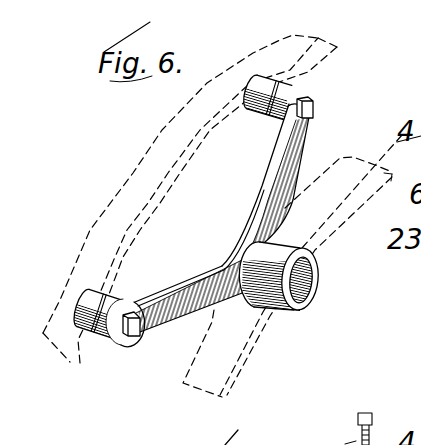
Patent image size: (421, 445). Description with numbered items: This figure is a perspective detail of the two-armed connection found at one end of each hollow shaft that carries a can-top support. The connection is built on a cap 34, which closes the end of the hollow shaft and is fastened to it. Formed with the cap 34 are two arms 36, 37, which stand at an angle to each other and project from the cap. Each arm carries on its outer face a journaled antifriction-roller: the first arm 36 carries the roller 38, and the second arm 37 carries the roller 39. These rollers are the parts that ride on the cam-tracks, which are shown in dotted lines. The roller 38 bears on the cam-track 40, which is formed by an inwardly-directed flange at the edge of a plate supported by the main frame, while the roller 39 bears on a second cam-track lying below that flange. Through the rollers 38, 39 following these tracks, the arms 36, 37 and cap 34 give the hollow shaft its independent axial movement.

The cap 34 is at (319, 282).
The arm 36 is at (287, 160).
The arm 37 is at (180, 305).
The antifriction-roller 38 is at (262, 84).
The antifriction-roller 39 is at (84, 303).
The cam-track 40 is at (318, 40).